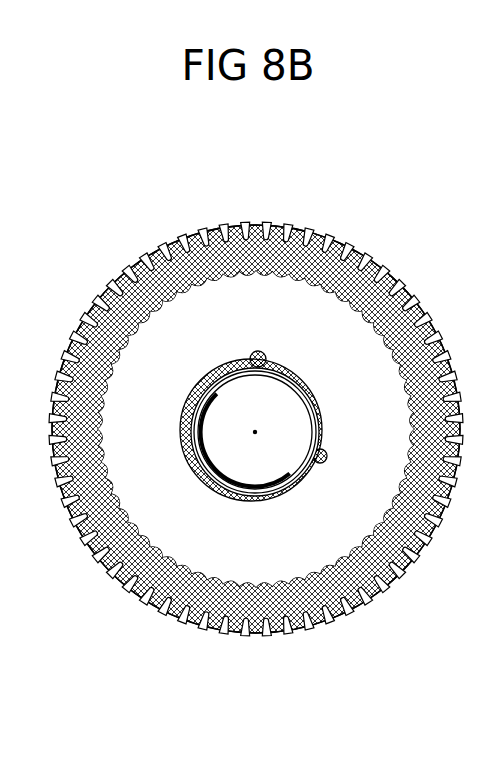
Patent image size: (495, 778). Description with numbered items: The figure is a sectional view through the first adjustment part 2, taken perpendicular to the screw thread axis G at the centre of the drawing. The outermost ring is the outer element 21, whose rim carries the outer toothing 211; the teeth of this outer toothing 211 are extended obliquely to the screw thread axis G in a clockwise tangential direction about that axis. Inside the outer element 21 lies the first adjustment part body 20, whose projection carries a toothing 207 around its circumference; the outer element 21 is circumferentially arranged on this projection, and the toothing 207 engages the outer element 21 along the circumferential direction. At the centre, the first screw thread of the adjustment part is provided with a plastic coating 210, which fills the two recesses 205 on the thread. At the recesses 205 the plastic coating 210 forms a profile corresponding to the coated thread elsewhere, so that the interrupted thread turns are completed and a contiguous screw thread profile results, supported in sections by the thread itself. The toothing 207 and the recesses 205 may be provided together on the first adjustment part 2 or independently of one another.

The first adjustment part 2 is at (255, 411).
The first adjustment part body 20 is at (278, 298).
The outer element 21 is at (348, 283).
The recesses 205 is at (318, 452).
The toothing 207 is at (137, 322).
The plastic coating 210 is at (213, 382).
The outer toothing 211 is at (188, 238).
The screw thread axis G is at (255, 432).